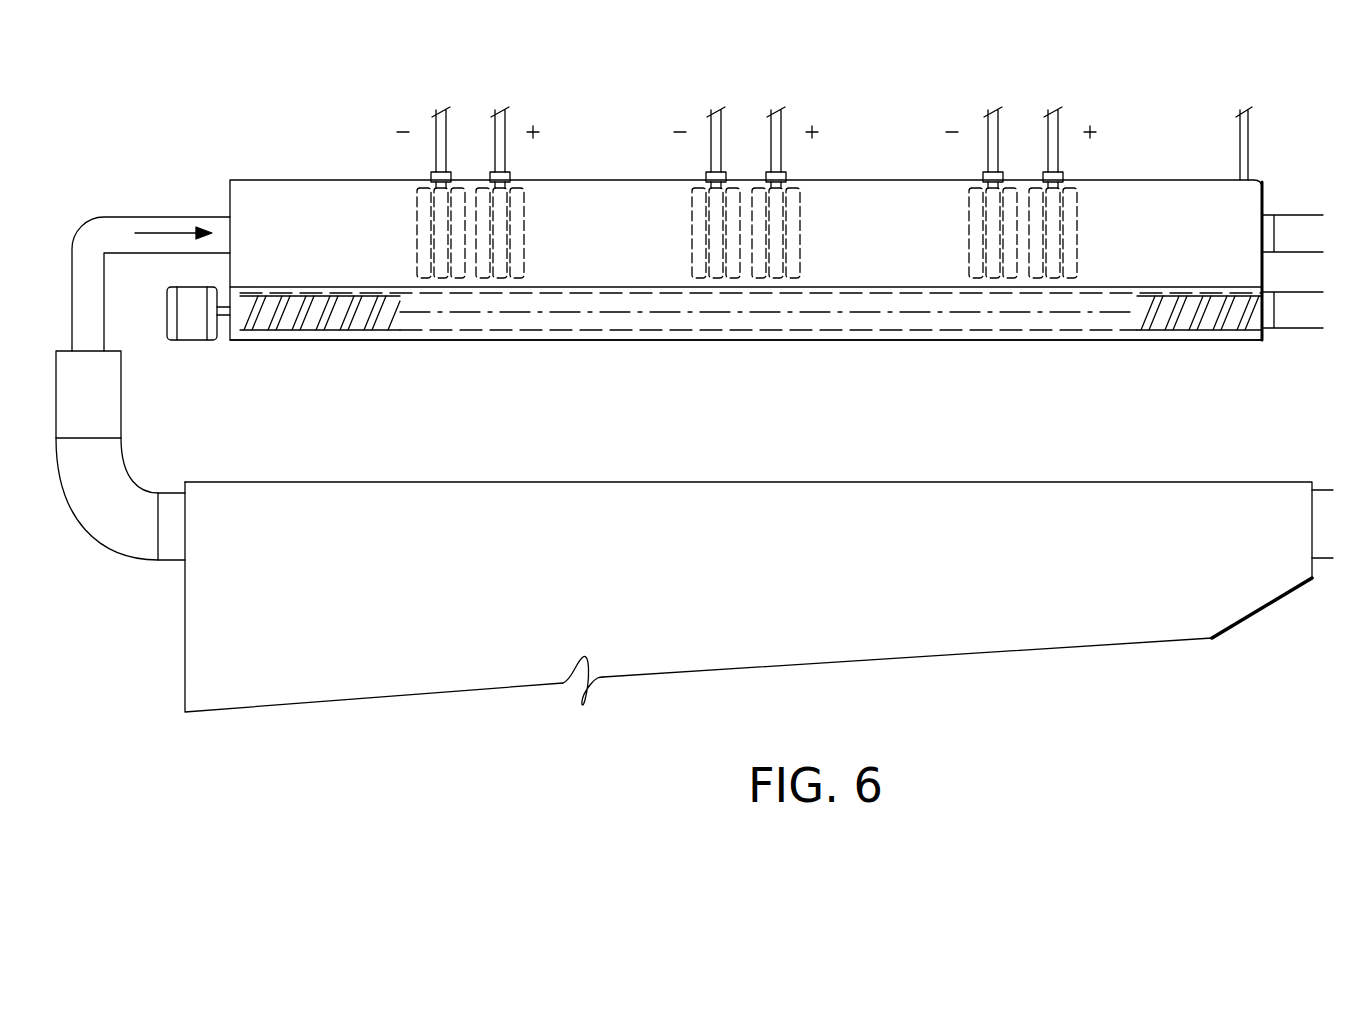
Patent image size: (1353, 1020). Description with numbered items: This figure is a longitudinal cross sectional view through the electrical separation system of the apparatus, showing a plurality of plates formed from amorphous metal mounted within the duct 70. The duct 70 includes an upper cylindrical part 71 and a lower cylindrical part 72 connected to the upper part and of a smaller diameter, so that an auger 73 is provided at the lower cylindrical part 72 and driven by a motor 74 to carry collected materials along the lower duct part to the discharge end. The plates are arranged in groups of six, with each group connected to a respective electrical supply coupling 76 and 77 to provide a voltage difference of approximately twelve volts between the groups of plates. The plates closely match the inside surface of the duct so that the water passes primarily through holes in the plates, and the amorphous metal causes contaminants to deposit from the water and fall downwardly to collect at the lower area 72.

The duct 70 is at (854, 184).
The upper cylindrical part 71 is at (588, 198).
The lower cylindrical part 72 is at (629, 343).
The auger 73 is at (788, 318).
The motor 74 is at (193, 333).
The electrical supply coupling 76 is at (431, 130).
The electrical supply coupling 77 is at (510, 128).